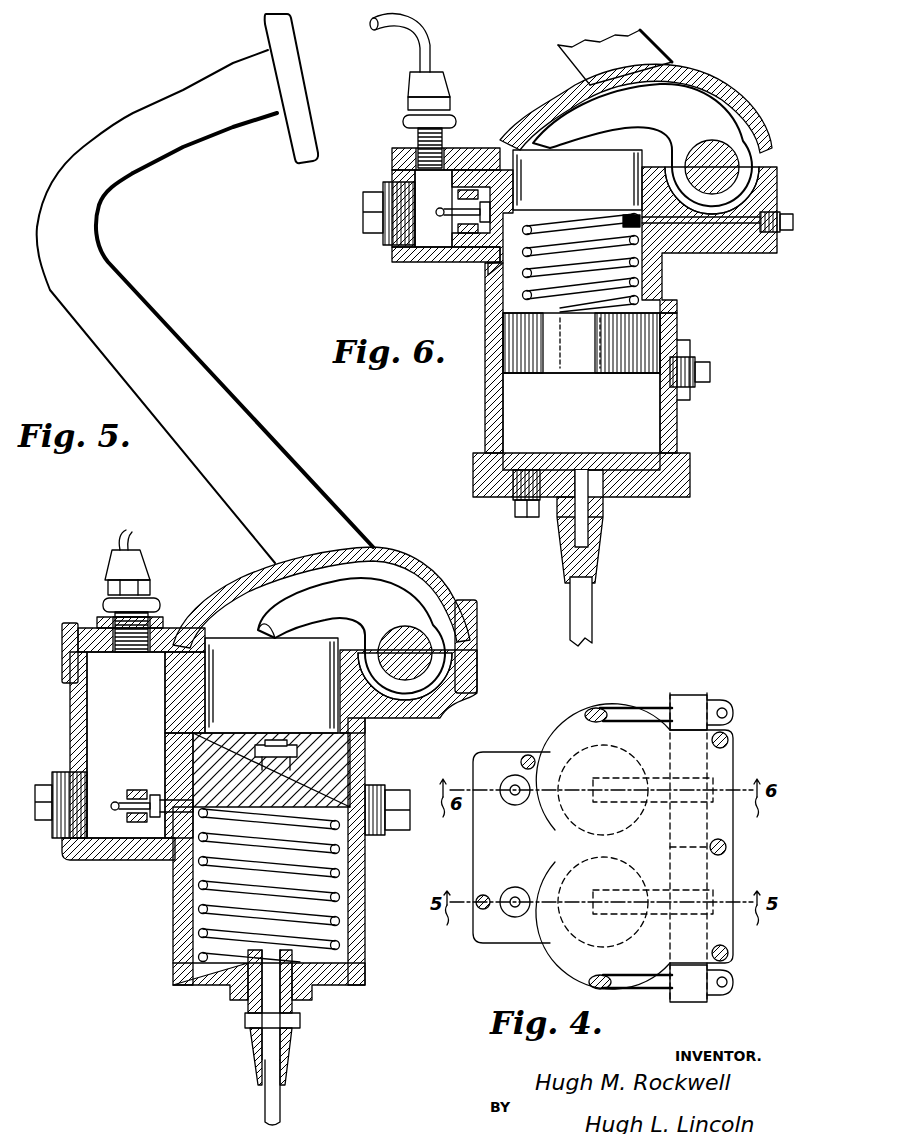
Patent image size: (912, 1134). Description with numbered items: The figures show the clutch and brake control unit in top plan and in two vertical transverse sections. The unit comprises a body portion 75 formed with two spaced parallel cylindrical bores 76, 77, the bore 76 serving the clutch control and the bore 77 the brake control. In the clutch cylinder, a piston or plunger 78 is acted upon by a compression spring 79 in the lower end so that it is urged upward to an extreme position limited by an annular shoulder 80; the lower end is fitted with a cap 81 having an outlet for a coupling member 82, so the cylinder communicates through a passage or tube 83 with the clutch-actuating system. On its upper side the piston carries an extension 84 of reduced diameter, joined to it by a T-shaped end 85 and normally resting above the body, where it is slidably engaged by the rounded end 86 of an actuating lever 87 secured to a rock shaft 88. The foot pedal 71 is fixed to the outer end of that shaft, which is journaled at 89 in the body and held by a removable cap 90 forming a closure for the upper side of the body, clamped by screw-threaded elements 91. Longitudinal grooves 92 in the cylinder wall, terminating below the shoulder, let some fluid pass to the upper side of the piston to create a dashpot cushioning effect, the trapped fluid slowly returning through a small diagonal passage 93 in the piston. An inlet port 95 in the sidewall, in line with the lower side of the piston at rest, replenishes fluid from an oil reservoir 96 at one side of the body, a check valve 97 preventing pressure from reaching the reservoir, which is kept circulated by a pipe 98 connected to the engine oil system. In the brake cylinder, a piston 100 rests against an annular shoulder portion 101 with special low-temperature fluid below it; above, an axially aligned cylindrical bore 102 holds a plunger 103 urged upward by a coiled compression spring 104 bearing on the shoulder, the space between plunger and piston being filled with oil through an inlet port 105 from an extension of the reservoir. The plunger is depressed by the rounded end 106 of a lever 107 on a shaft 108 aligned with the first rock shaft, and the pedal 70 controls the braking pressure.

In FIG. 5, the pedal 70 is at (178, 358).
In FIG. 6, the pedal 70 is at (645, 42).
In FIG. 4, the pedal 70 is at (630, 710).
In FIG. 4, the foot pedal 71 is at (618, 990).
In FIG. 5, the body portion 75 is at (155, 852).
In FIG. 5, the cylindrical bore 76 is at (335, 862).
In FIG. 4, the cylindrical bore 76 is at (565, 950).
In FIG. 6, the cylindrical bore 77 is at (640, 417).
In FIG. 4, the cylindrical bore 77 is at (585, 740).
In FIG. 5, the piston or plunger 78 is at (365, 765).
In FIG. 5, the compression spring 79 is at (340, 897).
In FIG. 6, the compression spring 79 is at (582, 263).
In FIG. 5, the annular shoulder 80 is at (365, 722).
In FIG. 5, the cap 81 is at (333, 985).
In FIG. 5, the coupling member 82 is at (245, 1018).
In FIG. 5, the passage or tube 83 is at (275, 1095).
In FIG. 5, the extension 84 is at (271, 685).
In FIG. 5, the T-shaped end 85 is at (262, 748).
In FIG. 5, the rounded end 86 is at (263, 625).
In FIG. 5, the actuating lever 87 is at (387, 583).
In FIG. 4, the actuating lever 87 is at (582, 918).
In FIG. 5, the rock shaft 88 is at (410, 627).
In FIG. 4, the rock shaft 88 is at (697, 872).
In FIG. 5, the journal 89 is at (443, 700).
In FIG. 5, the removable cap 90 is at (392, 558).
In FIG. 6, the removable cap 90 is at (700, 66).
In FIG. 4, the removable cap 90 is at (660, 833).
In FIG. 5, the screw-threaded elements 91 is at (68, 618).
In FIG. 4, the screw-threaded elements 91 is at (726, 850).
In FIG. 5, the longitudinal grooves 92 is at (368, 778).
In FIG. 5, the port or passage 93 is at (352, 745).
In FIG. 5, the inlet port 95 is at (178, 800).
In FIG. 5, the oil reservoir 96 is at (85, 700).
In FIG. 6, the oil reservoir 96 is at (410, 262).
In FIG. 5, the check valve 97 is at (130, 790).
In FIG. 5, the pipe or hose 98 is at (118, 566).
In FIG. 6, the piston 100 is at (633, 333).
In FIG. 6, the annular shoulder portion 101 is at (667, 290).
In FIG. 6, the cylindrical bore 102 is at (505, 265).
In FIG. 6, the plunger 103 is at (548, 163).
In FIG. 6, the coiled compression spring 104 is at (660, 263).
In FIG. 6, the inlet port 105 is at (462, 262).
In FIG. 6, the rounded end 106 is at (590, 128).
In FIG. 6, the lever 107 is at (690, 107).
In FIG. 4, the lever 107 is at (582, 803).
In FIG. 6, the shaft 108 is at (723, 143).
In FIG. 4, the shaft 108 is at (700, 762).